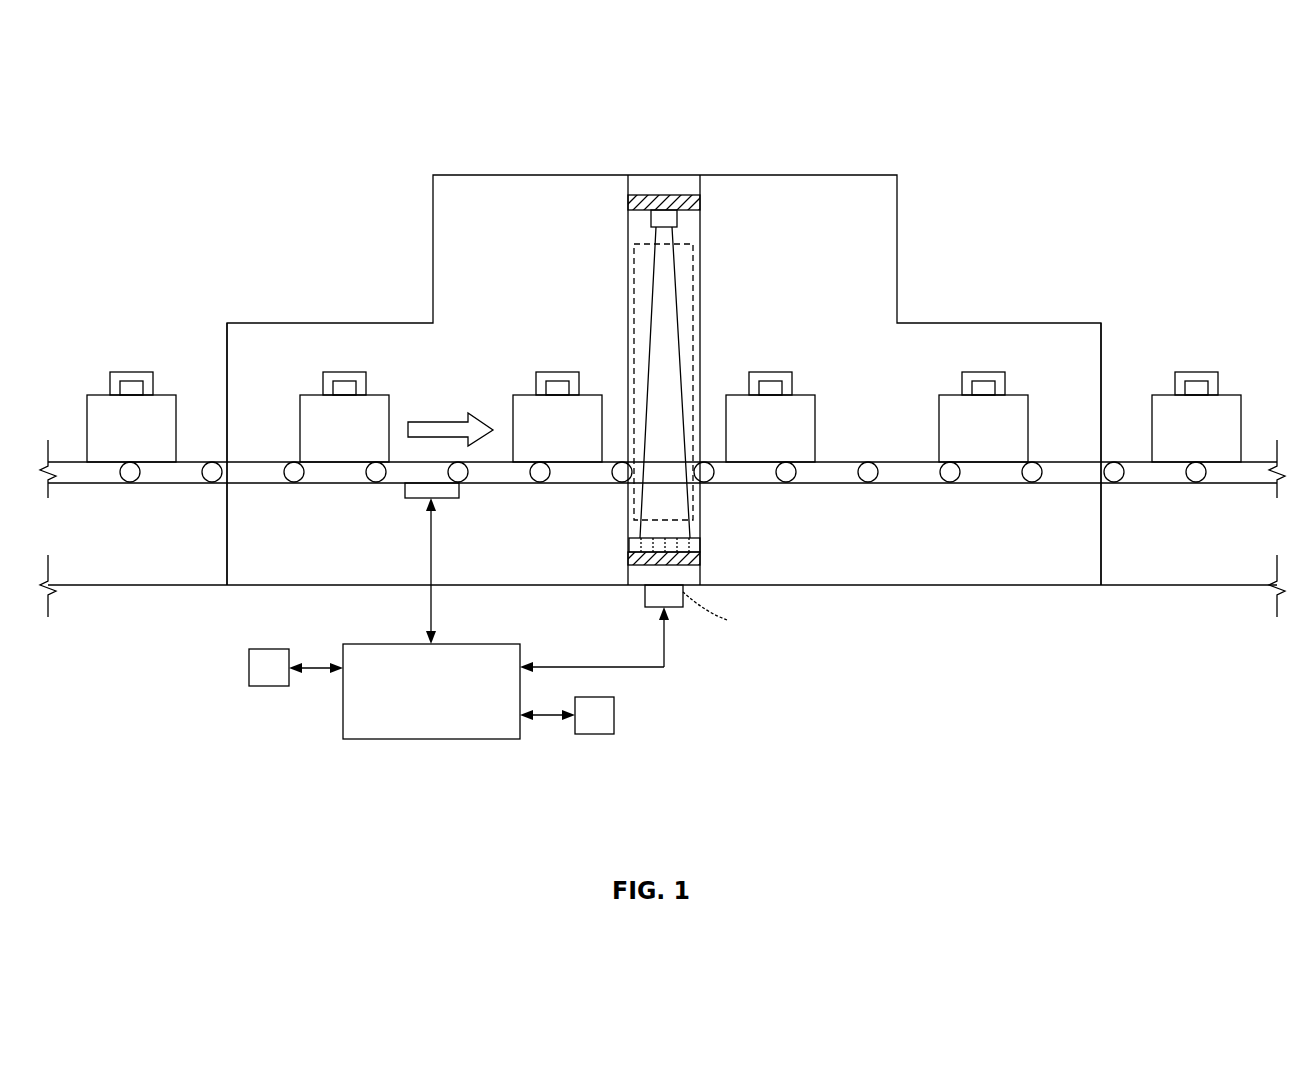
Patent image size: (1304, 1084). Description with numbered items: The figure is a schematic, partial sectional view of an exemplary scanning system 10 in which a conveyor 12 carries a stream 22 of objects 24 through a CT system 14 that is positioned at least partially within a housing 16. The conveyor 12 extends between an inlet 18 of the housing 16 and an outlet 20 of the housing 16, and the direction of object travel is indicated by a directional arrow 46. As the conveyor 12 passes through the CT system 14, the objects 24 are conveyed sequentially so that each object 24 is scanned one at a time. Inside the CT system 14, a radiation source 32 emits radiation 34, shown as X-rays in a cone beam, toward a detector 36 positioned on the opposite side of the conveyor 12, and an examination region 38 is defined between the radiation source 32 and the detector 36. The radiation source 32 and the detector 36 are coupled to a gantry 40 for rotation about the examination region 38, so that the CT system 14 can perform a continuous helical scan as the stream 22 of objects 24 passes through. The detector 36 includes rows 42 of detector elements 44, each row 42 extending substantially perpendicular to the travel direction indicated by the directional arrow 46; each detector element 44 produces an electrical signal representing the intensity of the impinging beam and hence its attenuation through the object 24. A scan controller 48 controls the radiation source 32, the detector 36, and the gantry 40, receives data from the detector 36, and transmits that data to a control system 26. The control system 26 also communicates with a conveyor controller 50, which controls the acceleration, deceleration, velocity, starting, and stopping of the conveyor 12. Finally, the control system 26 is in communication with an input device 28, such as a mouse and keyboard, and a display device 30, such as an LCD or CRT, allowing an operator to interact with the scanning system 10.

The scanning system 10 is at (103, 142).
The conveyor 12 is at (1157, 485).
The CT system 14 is at (665, 175).
The housing 16 is at (897, 220).
The inlet 18 is at (220, 343).
The outlet 20 is at (1108, 340).
The stream 22 is at (68, 430).
The objects 24 is at (100, 395).
The control system 26 is at (343, 706).
The input device 28 is at (614, 715).
The display device 30 is at (269, 686).
The radiation source 32 is at (672, 218).
The radiation 34 is at (683, 357).
The detector 36 is at (692, 540).
The examination region 38 is at (693, 310).
The gantry 40 is at (676, 202).
The rows 42 is at (697, 550).
The detector elements 44 is at (640, 545).
The directional arrow 46 is at (445, 420).
The scan controller 48 is at (645, 597).
The conveyor controller 50 is at (405, 492).